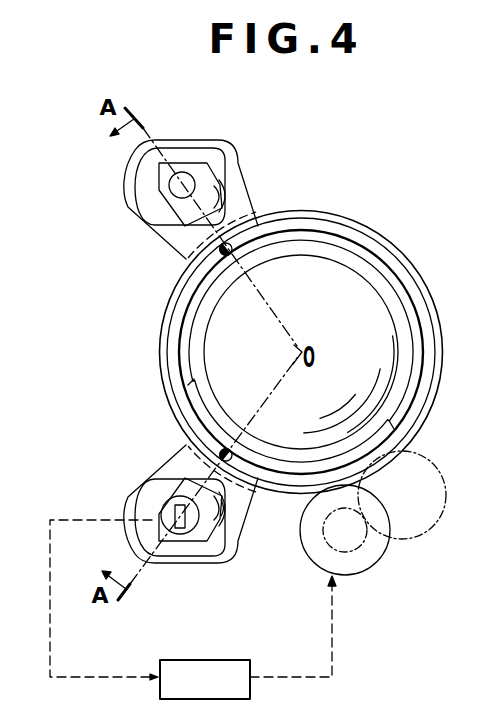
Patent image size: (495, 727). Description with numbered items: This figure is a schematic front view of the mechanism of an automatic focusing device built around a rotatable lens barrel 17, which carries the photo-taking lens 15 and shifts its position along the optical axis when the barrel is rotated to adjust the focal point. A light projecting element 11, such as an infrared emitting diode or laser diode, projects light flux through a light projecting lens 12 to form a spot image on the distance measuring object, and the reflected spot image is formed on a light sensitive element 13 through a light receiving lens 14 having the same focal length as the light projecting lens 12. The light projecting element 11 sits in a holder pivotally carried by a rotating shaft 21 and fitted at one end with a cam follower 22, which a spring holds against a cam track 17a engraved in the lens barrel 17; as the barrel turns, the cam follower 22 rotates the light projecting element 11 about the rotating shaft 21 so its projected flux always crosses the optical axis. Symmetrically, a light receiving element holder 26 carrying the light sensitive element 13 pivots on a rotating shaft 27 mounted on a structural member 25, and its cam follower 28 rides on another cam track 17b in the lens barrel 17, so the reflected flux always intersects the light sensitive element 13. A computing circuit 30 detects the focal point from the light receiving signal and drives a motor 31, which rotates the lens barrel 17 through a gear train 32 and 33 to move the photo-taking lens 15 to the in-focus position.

The light projecting element 11 is at (186, 176).
The light projecting lens 12 is at (155, 163).
The light sensitive element 13 is at (192, 540).
The light receiving lens 14 is at (213, 543).
The photo-taking lens 15 is at (200, 170).
The lens barrel 17 is at (388, 288).
The cam track 17a is at (190, 337).
The cam track 17b is at (293, 463).
The rotating shaft 21 is at (218, 190).
The cam follower 22 is at (228, 245).
The structural member 25 is at (423, 417).
The light receiving element holder 26 is at (158, 533).
The rotating shaft 27 is at (215, 510).
The cam follower 28 is at (188, 443).
The computing circuit 30 is at (243, 660).
The motor 31 is at (365, 563).
The gear 32 is at (362, 538).
The gear 33 is at (432, 520).